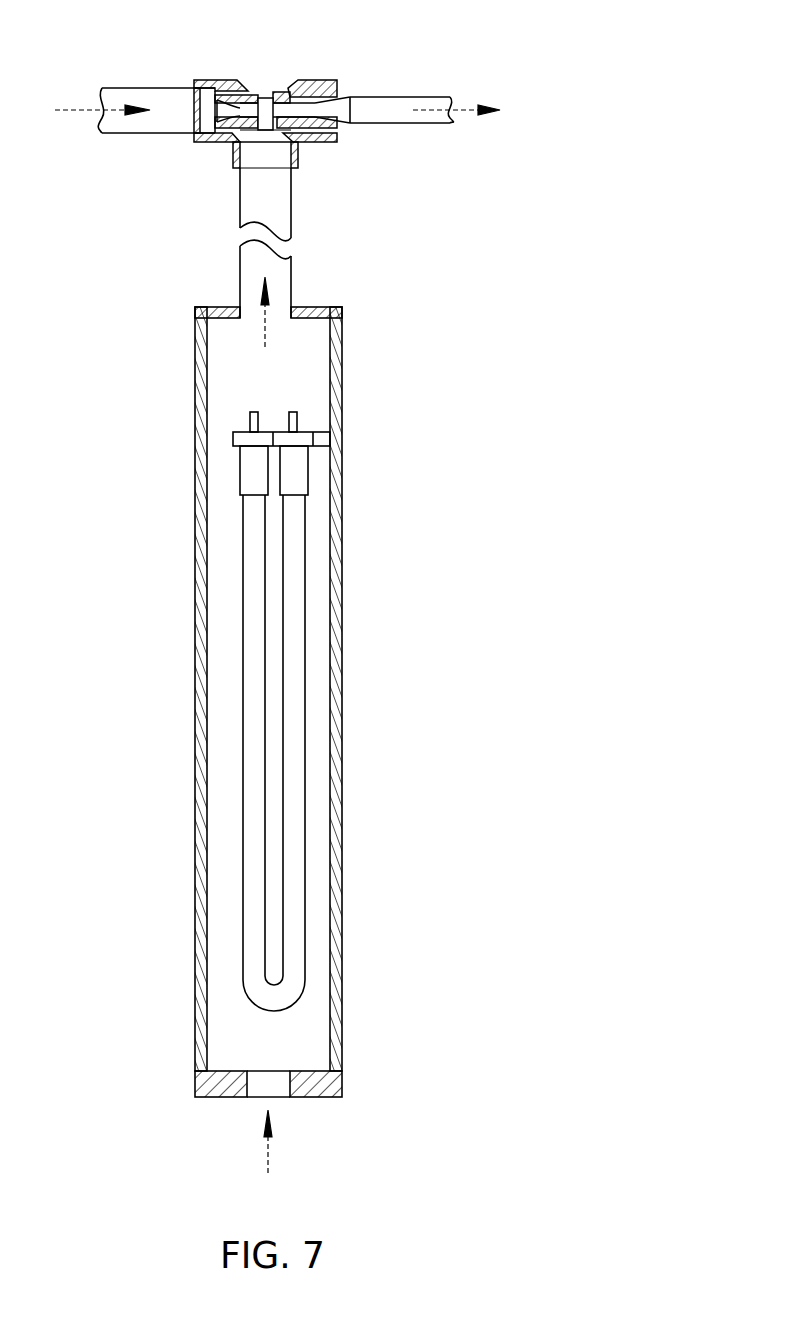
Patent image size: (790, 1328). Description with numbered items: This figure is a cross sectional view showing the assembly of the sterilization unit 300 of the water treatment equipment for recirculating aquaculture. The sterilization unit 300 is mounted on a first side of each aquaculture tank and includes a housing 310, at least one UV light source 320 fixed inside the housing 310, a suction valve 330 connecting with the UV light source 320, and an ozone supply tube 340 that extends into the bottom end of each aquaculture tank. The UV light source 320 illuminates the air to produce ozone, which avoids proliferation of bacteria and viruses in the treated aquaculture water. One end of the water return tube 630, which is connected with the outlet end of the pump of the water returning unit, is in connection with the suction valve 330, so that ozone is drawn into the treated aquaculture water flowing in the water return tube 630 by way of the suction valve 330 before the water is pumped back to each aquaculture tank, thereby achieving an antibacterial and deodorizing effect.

The sterilization unit 300 is at (134, 681).
The housing 310 is at (342, 542).
The UV light source 320 is at (292, 668).
The suction valve 330 is at (330, 83).
The ozone supply tube 340 is at (388, 108).
The water return tube 630 is at (147, 97).